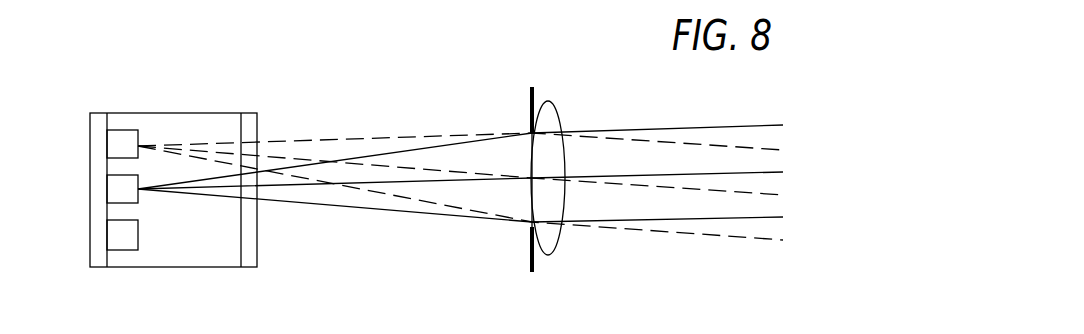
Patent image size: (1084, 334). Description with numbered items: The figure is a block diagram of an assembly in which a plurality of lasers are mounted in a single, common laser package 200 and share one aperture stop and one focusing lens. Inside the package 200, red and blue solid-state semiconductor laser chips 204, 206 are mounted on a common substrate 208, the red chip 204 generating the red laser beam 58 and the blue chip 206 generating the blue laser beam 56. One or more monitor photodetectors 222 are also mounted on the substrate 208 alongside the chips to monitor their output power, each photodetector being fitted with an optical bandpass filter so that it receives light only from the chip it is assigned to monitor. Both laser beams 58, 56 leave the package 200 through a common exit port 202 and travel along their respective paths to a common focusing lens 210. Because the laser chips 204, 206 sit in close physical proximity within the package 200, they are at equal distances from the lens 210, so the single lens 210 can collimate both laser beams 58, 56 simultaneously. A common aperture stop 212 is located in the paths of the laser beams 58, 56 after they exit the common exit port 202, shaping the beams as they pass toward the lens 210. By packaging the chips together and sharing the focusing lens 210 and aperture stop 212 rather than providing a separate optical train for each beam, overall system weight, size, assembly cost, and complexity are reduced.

The common laser package 200 is at (185, 113).
The common exit port 202 is at (255, 257).
The red laser chip 204 is at (118, 141).
The blue laser chip 206 is at (118, 192).
The common substrate 208 is at (97, 247).
The monitor photodetector 222 is at (130, 245).
The blue laser beam 56 is at (378, 212).
The red laser beam 58 is at (405, 138).
The common focusing lens 210 is at (550, 118).
The common aperture stop 212 is at (528, 252).